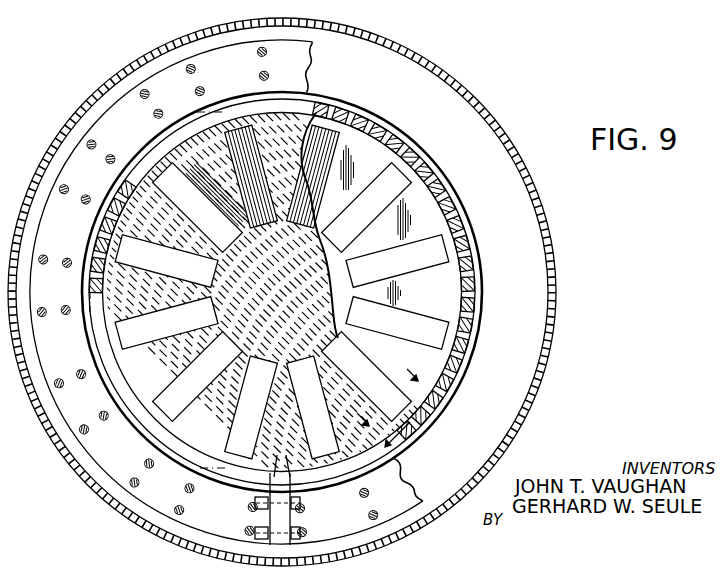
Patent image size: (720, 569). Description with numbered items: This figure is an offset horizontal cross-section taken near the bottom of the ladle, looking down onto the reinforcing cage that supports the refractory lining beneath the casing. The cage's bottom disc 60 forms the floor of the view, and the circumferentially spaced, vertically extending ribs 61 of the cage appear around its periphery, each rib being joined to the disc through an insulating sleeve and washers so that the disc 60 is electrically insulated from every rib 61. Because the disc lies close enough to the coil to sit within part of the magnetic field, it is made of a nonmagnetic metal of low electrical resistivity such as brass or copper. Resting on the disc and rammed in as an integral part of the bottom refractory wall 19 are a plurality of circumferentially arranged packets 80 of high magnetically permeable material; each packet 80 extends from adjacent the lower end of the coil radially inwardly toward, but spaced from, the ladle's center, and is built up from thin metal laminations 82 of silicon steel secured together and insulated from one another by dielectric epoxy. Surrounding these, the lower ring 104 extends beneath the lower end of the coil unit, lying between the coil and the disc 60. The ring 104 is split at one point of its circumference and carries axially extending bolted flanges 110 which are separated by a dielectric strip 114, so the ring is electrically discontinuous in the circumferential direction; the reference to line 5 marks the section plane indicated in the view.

The lower ring 104 is at (302, 61).
The ribs 61 is at (428, 168).
The bottom refractory wall 19 is at (298, 157).
The metal laminations 82 is at (257, 181).
The packets 80 is at (348, 282).
The bottom disc 60 is at (441, 309).
The section line 5- 5 is at (377, 403).
The bolted flanges 110 is at (285, 456).
The dielectric strip 114 is at (278, 517).